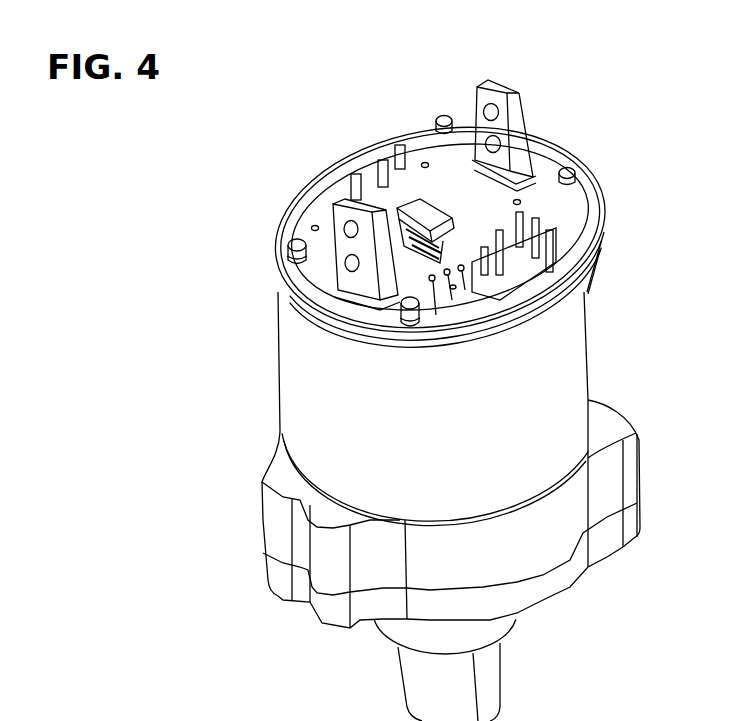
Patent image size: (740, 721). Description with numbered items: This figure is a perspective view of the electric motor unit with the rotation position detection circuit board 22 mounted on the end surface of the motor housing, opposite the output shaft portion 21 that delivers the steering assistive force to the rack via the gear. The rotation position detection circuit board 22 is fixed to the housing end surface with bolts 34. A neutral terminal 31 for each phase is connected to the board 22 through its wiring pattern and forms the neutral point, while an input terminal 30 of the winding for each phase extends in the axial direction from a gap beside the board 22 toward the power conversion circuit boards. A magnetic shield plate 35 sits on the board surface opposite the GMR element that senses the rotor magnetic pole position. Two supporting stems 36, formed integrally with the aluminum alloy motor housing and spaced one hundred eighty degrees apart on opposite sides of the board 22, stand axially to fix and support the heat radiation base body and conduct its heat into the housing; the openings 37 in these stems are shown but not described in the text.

The output shaft portion 21 is at (492, 683).
The rotation position detection circuit board 22 is at (480, 200).
The input terminal 30 is at (415, 132).
The neutral terminal 31 is at (458, 312).
The bolt 34 is at (442, 117).
The magnetic shield plate 35 is at (428, 212).
The supporting stem 36 is at (518, 122).
The holes 37 is at (500, 141).